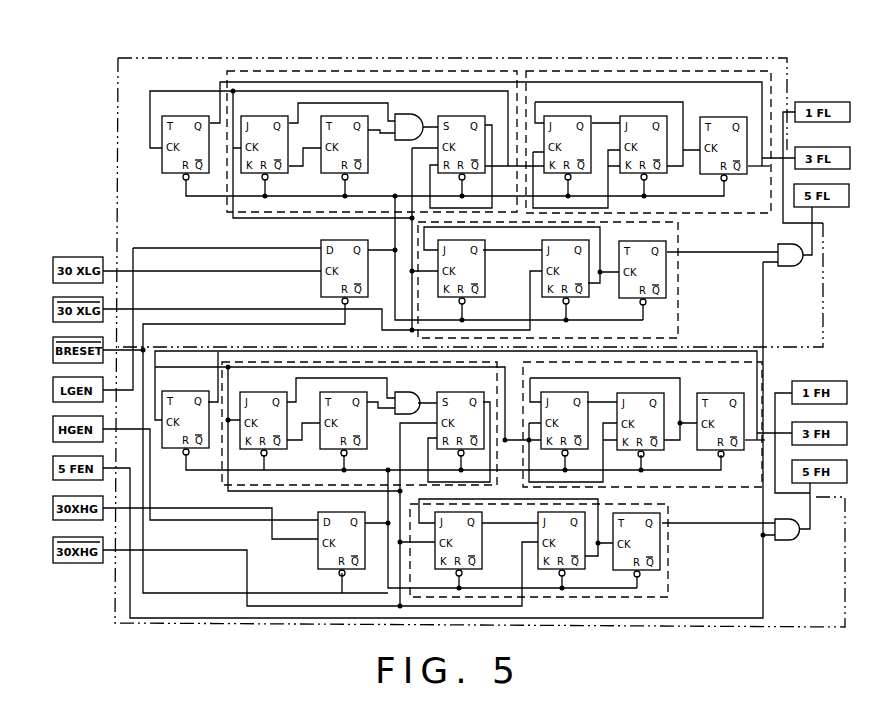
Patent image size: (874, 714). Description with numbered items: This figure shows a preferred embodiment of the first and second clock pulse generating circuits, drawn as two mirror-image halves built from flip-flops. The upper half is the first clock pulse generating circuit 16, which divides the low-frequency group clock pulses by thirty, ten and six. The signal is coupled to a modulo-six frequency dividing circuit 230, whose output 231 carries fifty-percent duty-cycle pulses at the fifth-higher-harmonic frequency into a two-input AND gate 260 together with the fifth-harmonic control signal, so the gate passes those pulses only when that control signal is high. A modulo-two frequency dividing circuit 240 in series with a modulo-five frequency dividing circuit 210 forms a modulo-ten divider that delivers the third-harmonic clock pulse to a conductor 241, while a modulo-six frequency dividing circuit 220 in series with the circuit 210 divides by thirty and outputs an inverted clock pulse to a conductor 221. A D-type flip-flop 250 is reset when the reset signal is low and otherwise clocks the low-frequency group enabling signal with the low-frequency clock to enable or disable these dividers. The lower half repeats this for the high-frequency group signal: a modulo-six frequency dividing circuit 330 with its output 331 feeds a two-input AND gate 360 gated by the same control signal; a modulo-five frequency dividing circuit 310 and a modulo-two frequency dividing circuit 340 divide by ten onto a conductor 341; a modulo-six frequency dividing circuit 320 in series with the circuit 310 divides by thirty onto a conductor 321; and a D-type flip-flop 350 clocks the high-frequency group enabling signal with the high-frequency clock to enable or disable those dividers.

The first clock pulse generating circuit 16 is at (160, 57).
The modulo-5 frequency dividing circuit 210 is at (227, 72).
The modulo-6 frequency dividing circuit 220 is at (704, 214).
The conductor 221 is at (764, 172).
The modulo-6 frequency dividing circuit 230 is at (678, 295).
The output of modulo-6 frequency dividing circuit 231 is at (725, 253).
The modulo-2 frequency dividing circuit 240 is at (165, 116).
The conductor 241 is at (787, 72).
The D-type flip-flop 250 is at (322, 240).
The two-input AND gate 260 is at (788, 266).
The modulo-5 frequency dividing circuit 310 is at (222, 483).
The modulo-6 frequency dividing circuit 320 is at (716, 488).
The conductor 321 is at (754, 445).
The modulo-6 frequency dividing circuit 330 is at (670, 567).
The output of modulo-6 frequency dividing circuit 331 is at (718, 524).
The modulo-2 frequency dividing circuit 340 is at (165, 391).
The conductor 341 is at (222, 362).
The D-type flip-flop 350 is at (318, 557).
The two-input AND gate 360 is at (790, 541).